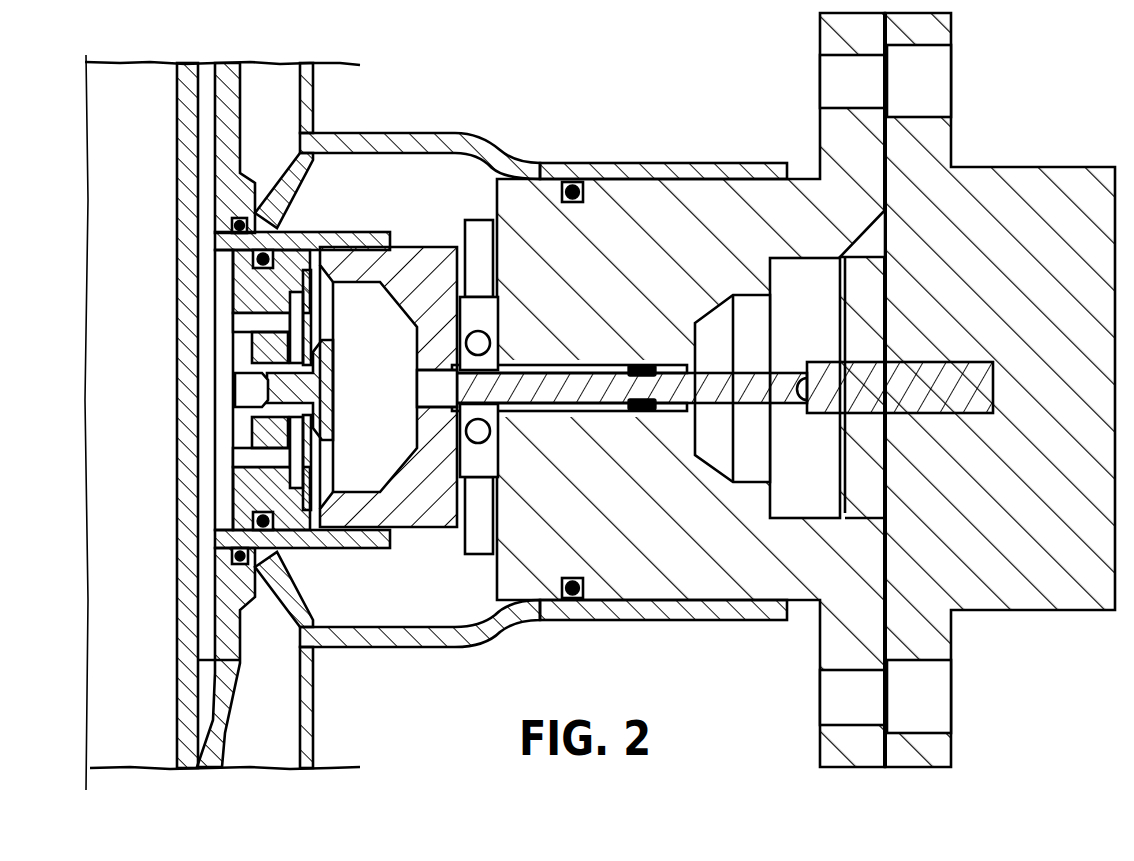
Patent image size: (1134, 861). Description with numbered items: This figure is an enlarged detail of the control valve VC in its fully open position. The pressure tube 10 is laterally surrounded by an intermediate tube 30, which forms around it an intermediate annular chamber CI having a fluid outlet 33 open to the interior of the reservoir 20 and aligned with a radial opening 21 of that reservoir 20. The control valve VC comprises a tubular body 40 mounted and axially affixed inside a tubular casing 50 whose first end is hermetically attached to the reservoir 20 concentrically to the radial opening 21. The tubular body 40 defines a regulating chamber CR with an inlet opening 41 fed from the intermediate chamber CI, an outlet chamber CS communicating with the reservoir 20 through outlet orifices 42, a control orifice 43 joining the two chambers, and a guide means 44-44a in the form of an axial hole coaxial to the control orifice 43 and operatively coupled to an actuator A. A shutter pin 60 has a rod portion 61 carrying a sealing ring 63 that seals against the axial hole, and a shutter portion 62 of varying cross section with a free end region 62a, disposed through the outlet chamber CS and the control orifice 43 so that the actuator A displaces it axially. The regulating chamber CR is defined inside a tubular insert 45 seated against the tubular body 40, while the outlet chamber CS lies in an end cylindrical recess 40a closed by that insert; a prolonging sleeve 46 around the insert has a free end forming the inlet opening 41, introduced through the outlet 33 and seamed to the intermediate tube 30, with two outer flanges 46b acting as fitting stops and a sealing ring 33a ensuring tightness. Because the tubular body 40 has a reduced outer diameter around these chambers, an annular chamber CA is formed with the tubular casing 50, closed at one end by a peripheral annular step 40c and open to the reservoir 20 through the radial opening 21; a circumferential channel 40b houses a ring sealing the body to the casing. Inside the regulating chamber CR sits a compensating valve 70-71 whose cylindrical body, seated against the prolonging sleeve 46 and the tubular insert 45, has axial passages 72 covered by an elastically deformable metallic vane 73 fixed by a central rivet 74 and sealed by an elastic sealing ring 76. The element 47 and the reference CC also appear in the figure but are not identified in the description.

The pressure tube 10 is at (168, 172).
The intermediate annular chamber CI is at (208, 85).
The intermediate tube 30 is at (232, 93).
The reservoir 20 is at (273, 83).
The radial opening 21 is at (305, 197).
The fluid outlet 33 is at (232, 267).
The sealing ring 33a is at (238, 218).
The metallic vane 73 is at (358, 327).
The regulating chamber CR is at (318, 307).
The outlet orifices 42 is at (482, 250).
The peripheral annular step 40c is at (482, 200).
The tubular casing 50 is at (676, 147).
The control valve VC is at (700, 140).
The tubular body 40 is at (700, 240).
The outlet chamber CS is at (478, 312).
The shutter portion 62 is at (563, 370).
The actuator A is at (860, 396).
The end cylindrical recess 40a is at (430, 322).
The control orifice 43 is at (414, 380).
The axial passages 72 is at (270, 458).
The free end region 62a is at (440, 393).
The guide means and axial hole 44-44a is at (537, 390).
The sealing ring 63 is at (648, 423).
The rod portion 61 is at (748, 388).
The compensating valve and cylindrical body 70-71 is at (265, 488).
The central rivet 74 is at (347, 392).
The shutter pin 60 is at (717, 420).
The inlet opening 41 is at (222, 513).
The circumferential channel 40b is at (580, 578).
The elastic sealing ring 76 is at (258, 558).
The prolonging sleeve 46 is at (350, 552).
The tubular insert 45 is at (410, 512).
The outer flanges 46b is at (293, 563).
The bottom plate 47 is at (557, 580).
The annular chamber CA is at (425, 593).
The center line CC is at (150, 375).